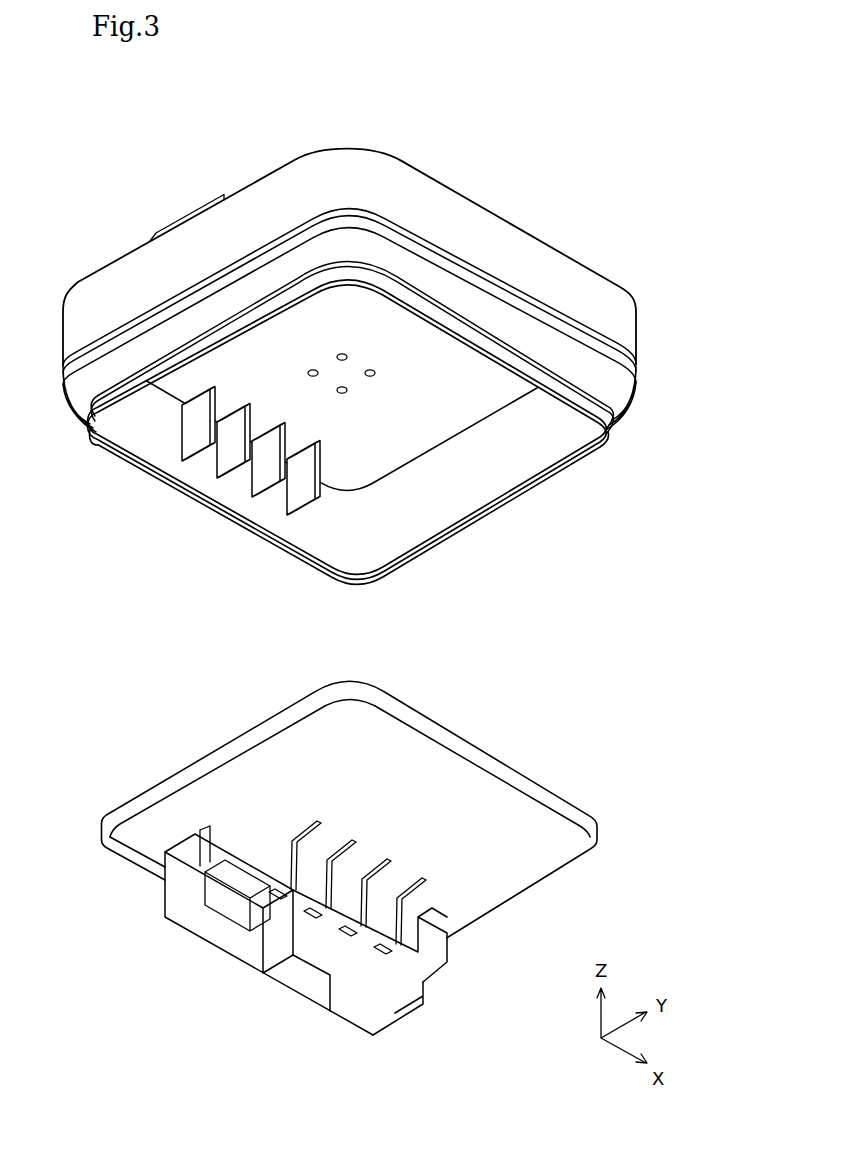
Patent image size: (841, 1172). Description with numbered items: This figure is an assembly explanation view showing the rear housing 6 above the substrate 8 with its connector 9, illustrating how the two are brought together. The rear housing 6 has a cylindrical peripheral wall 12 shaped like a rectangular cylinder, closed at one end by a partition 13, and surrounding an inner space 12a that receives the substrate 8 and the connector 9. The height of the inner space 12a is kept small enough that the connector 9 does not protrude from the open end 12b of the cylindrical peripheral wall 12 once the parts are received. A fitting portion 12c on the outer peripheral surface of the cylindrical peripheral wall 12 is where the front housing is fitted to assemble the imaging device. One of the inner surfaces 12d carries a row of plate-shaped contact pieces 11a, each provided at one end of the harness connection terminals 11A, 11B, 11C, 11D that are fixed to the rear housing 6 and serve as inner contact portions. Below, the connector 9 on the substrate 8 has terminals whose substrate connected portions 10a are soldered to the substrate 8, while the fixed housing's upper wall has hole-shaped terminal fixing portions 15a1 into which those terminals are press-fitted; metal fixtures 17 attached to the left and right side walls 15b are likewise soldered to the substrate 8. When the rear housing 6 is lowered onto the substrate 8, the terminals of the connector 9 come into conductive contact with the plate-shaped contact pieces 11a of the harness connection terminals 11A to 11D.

The rear housing 6 is at (459, 184).
The substrate 8 is at (522, 778).
The connector 9 is at (450, 945).
The substrate connected portion 10a is at (325, 857).
The plate-shaped contact piece 11a is at (179, 508).
The harness connection terminal 11A is at (240, 487).
The harness connection terminal 11B is at (220, 467).
The harness connection terminal 11C is at (288, 516).
The harness connection terminal 11D is at (187, 441).
The cylindrical peripheral wall 12 is at (497, 510).
The inner space 12a is at (393, 526).
The open end 12b is at (378, 580).
The fitting portion 12c is at (538, 334).
The inner surface 12d is at (557, 418).
The partition 13 is at (478, 398).
The terminal fixing portion 15a1 is at (318, 925).
The side wall 15b is at (170, 893).
The metal fixture 17 is at (200, 833).